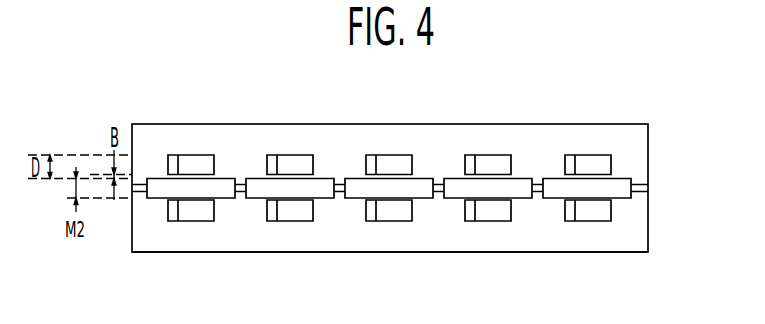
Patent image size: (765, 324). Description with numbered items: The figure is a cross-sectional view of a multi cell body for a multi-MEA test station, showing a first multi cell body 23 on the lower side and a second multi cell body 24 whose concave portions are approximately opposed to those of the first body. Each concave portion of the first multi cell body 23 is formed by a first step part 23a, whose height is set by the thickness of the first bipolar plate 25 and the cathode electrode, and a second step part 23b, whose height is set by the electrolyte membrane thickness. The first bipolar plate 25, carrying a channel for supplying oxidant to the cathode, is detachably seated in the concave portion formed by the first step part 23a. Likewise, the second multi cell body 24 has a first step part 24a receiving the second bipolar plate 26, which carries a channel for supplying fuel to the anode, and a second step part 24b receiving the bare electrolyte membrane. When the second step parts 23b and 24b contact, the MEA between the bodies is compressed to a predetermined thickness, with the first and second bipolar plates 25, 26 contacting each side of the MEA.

The first multi cell body 23 is at (637, 125).
The first step part 23a is at (611, 168).
The second step part 23b is at (635, 180).
The second multi cell body 24 is at (636, 252).
The first step part 24a is at (612, 212).
The second step part 24b is at (612, 199).
The first bipolar plate 25 is at (604, 161).
The second bipolar plate 26 is at (595, 215).